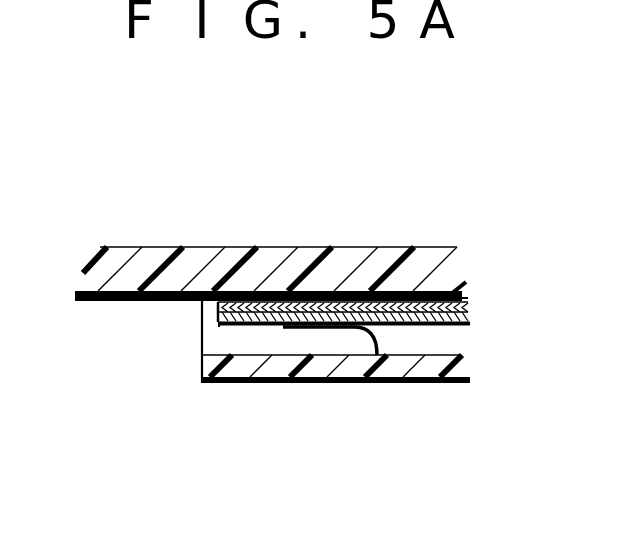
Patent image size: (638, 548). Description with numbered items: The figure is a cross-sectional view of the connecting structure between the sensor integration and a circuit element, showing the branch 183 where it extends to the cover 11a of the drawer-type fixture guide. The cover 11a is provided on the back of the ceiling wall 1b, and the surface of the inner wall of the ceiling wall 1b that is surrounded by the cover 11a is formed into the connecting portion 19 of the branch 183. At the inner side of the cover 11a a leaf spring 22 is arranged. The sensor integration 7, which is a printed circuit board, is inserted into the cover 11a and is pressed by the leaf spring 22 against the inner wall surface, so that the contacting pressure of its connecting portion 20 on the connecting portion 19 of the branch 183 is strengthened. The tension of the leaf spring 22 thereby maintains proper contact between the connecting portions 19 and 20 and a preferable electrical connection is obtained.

The ceiling wall 1b is at (163, 258).
The branch 183 is at (140, 302).
The connecting portion 19 is at (358, 292).
The sensor integration 7 is at (442, 326).
The connecting portion 20 is at (231, 324).
The leaf spring 22 is at (284, 330).
The cover 11a is at (413, 385).